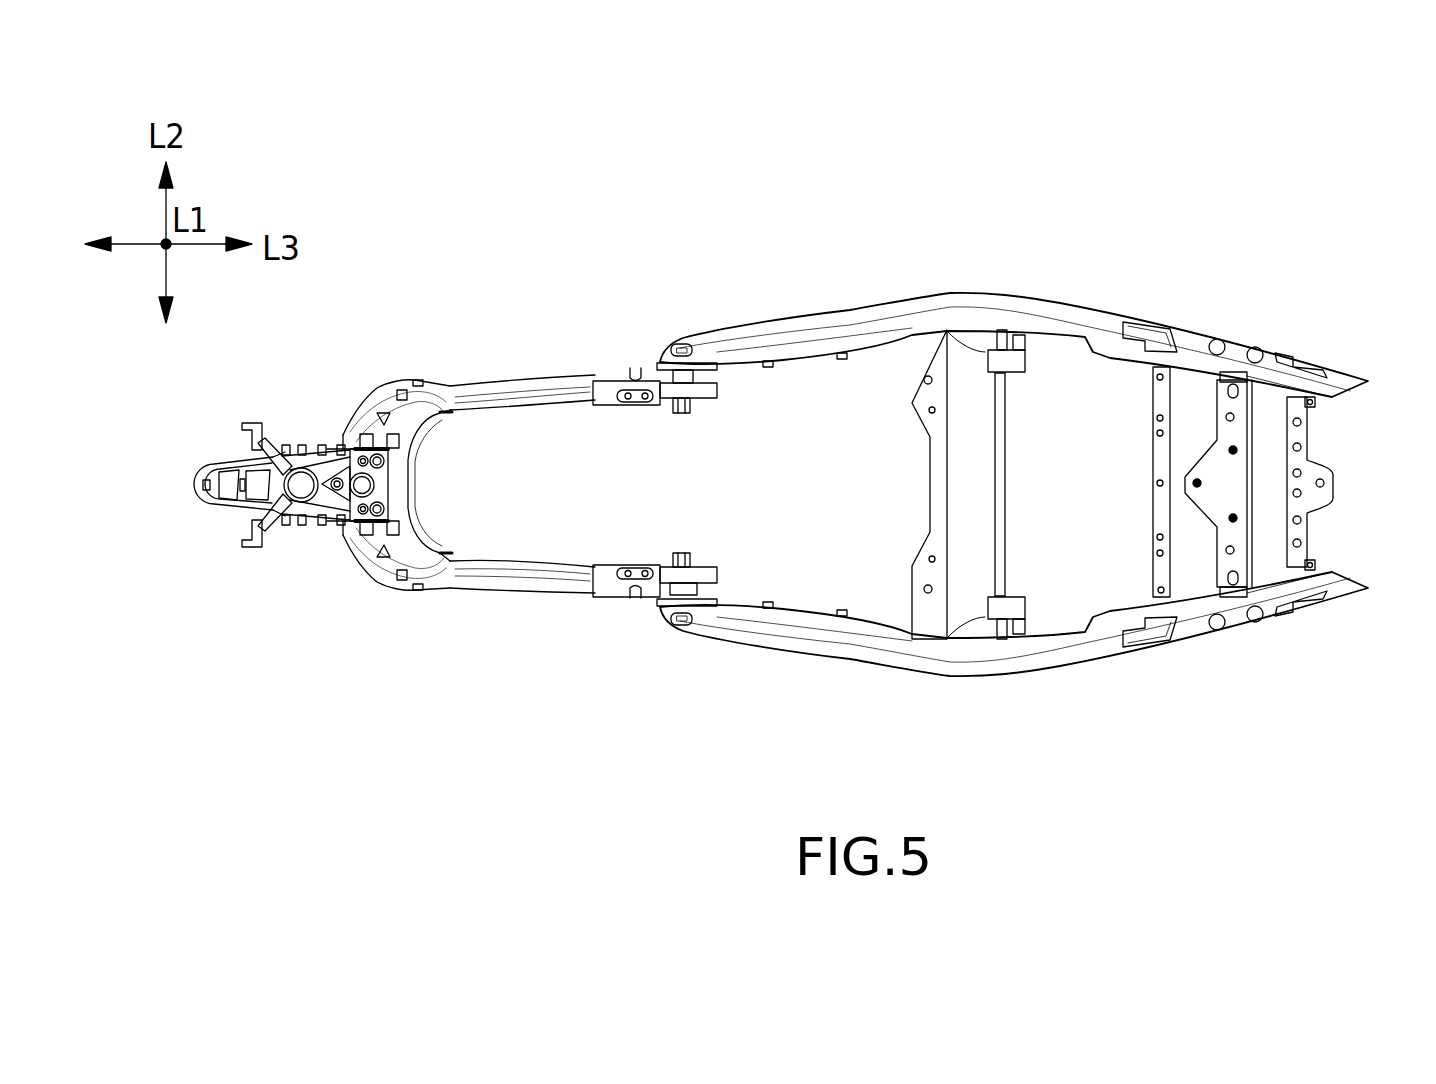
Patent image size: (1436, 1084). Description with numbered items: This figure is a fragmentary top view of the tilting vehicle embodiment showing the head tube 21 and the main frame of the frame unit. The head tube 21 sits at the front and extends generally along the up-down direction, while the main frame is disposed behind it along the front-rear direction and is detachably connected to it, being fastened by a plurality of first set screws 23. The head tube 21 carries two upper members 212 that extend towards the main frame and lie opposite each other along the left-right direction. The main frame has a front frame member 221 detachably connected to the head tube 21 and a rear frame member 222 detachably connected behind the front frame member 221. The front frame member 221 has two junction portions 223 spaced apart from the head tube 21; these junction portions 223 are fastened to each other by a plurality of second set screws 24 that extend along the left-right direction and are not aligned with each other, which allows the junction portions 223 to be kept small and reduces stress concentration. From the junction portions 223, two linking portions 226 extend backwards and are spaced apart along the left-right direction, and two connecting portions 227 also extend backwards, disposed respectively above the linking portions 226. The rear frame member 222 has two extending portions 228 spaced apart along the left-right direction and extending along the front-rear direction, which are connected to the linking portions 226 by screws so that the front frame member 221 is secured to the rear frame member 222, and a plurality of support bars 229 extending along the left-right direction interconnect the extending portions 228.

The head tube 21 is at (210, 463).
The upper members 212 is at (320, 467).
The first set screws 23 is at (290, 517).
The second set screws 24 is at (424, 530).
The front frame member 221 is at (468, 473).
The rear frame member 222 is at (1037, 451).
The junction portions 223 is at (365, 400).
The linking portions 226 is at (636, 368).
The connecting portions 227 is at (490, 377).
The extending portions 228 is at (1088, 318).
The support bars 229 is at (993, 482).